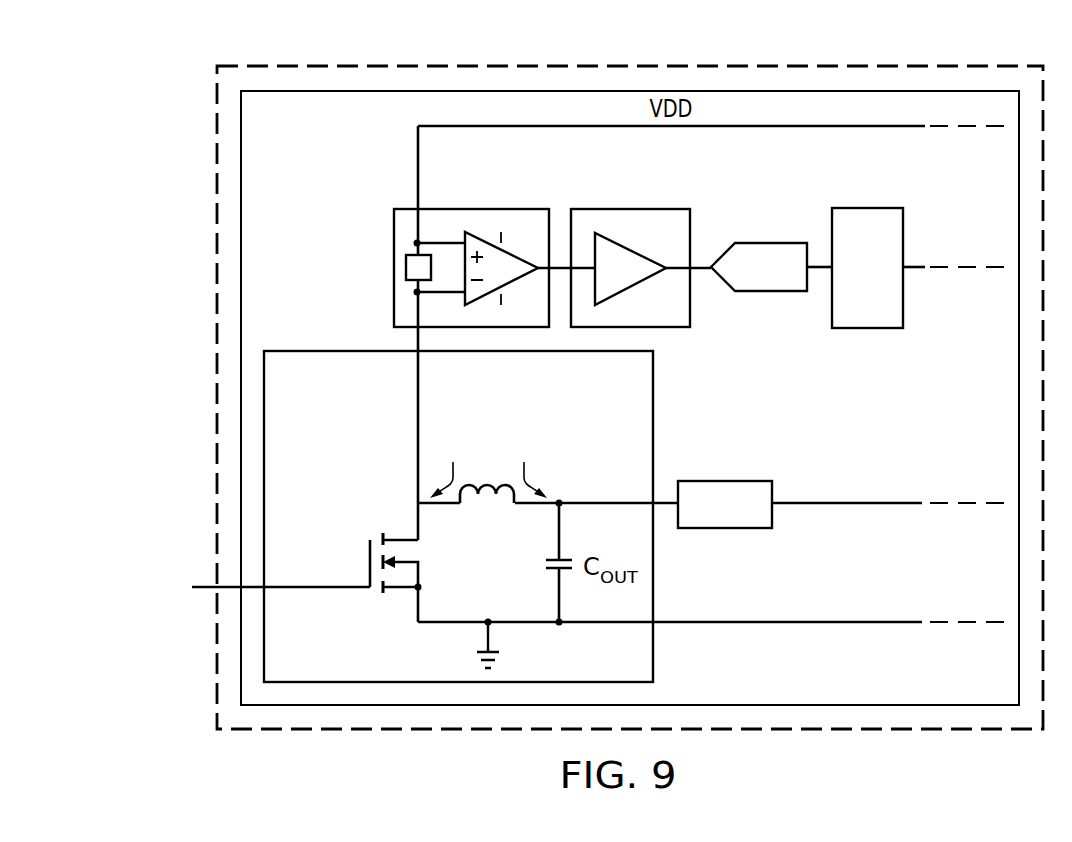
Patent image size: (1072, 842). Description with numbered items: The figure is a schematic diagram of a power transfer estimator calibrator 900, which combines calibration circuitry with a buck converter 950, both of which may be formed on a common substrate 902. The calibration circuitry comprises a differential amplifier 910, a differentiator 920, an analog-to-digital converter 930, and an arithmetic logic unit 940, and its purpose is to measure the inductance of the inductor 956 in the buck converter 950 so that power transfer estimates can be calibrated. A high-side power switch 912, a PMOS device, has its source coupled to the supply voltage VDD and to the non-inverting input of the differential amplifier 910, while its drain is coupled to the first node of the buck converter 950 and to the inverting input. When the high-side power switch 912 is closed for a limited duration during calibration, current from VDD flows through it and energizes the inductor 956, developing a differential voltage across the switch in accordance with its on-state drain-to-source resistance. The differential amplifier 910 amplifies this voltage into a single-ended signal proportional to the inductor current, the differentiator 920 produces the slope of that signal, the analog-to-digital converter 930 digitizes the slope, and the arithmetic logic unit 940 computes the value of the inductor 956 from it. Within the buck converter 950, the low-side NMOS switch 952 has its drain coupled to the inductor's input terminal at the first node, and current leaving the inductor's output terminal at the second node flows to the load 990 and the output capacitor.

The power transfer estimator calibrator 900 is at (961, 420).
The substrate 902 is at (531, 67).
The differential amplifier 910 is at (404, 208).
The high-side power switch 912 is at (406, 268).
The differentiator 920 is at (618, 208).
The analog-to-digital converter 930 is at (771, 243).
The arithmetic logic unit 940 is at (845, 303).
The buck converter 950 is at (358, 456).
The low-side NMOS switch 952 is at (370, 552).
The inductor 956 is at (493, 487).
The load 990 is at (727, 530).